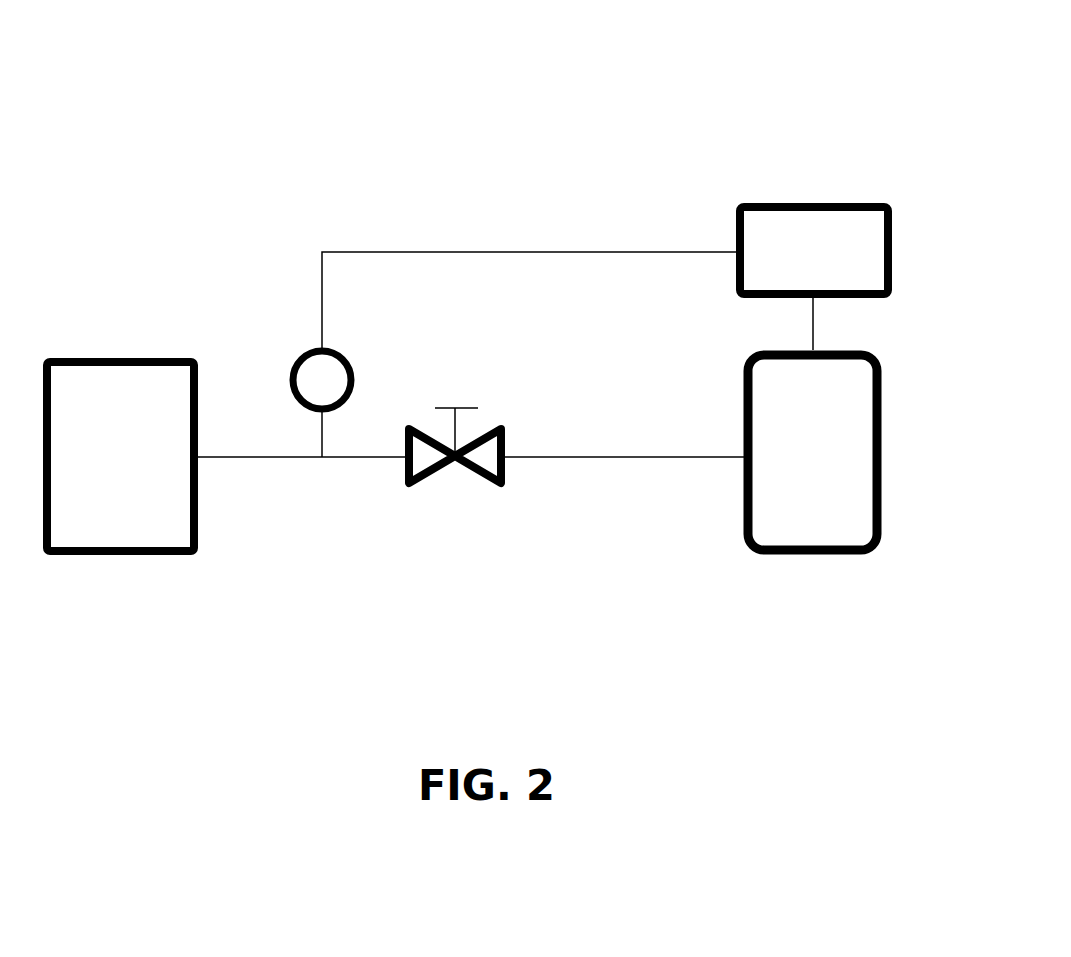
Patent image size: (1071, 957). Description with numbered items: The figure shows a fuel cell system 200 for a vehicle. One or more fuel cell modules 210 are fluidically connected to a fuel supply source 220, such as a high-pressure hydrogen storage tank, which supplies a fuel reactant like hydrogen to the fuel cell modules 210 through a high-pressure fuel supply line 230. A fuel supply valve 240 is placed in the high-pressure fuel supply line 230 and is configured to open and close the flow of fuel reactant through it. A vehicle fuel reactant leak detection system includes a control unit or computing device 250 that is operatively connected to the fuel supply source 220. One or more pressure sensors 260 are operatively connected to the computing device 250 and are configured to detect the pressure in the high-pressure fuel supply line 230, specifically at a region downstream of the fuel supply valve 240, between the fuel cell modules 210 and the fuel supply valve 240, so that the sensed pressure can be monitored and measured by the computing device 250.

The fuel cell system 200 is at (110, 125).
The fuel cell modules 210 is at (120, 555).
The fuel supply source 220 is at (813, 555).
The high-pressure fuel supply line 230 is at (622, 458).
The fuel supply valve 240 is at (502, 485).
The computing device 250 is at (890, 247).
The pressure sensors 260 is at (302, 357).